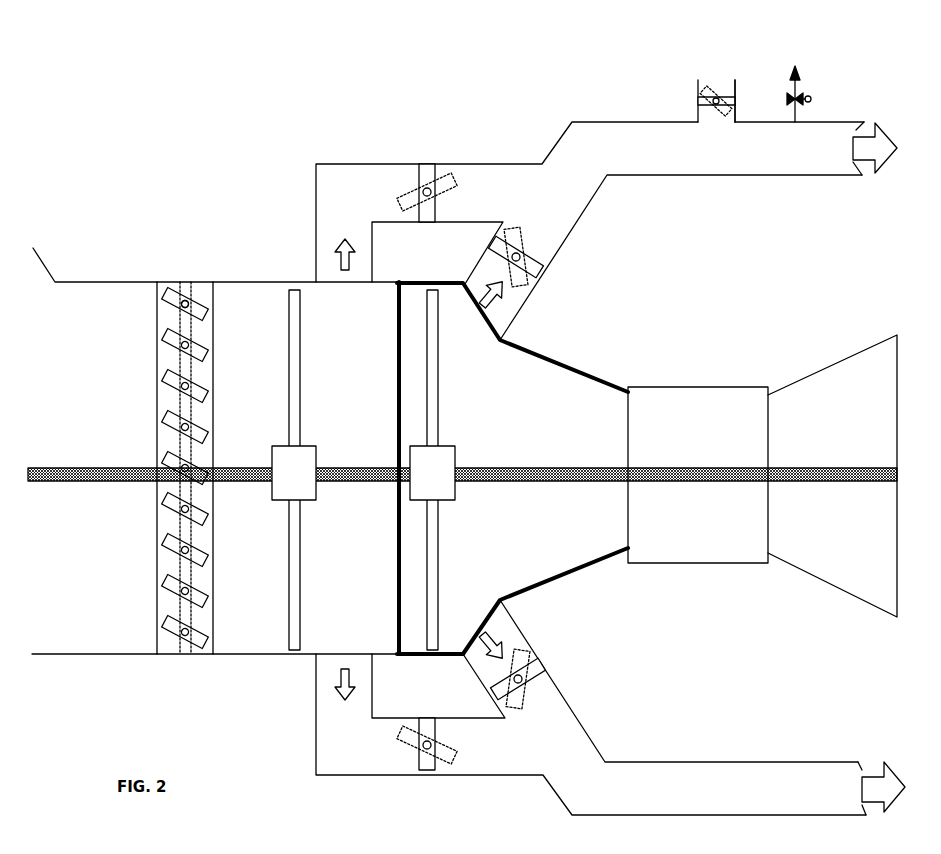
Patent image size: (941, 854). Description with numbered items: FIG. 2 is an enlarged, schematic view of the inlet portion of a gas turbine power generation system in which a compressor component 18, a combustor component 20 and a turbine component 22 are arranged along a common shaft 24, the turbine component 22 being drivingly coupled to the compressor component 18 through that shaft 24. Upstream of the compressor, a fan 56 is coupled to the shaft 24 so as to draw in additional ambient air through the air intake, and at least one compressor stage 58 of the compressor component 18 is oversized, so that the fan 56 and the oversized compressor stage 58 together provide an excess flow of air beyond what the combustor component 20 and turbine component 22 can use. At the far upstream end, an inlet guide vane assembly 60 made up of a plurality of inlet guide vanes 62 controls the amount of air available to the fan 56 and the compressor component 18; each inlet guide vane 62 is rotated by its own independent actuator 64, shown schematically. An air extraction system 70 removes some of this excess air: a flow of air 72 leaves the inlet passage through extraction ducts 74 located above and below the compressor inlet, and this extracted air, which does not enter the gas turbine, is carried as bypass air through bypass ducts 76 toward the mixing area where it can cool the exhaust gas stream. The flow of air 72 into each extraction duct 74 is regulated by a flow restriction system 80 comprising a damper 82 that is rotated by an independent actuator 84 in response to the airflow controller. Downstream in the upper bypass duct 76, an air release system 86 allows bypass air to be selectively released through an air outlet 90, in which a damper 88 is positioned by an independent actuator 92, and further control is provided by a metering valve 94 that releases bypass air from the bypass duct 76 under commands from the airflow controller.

The compressor component 18 is at (512, 468).
The combustor component 20 is at (698, 475).
The turbine component 22 is at (832, 476).
The shaft 24 is at (96, 466).
The fan 56 is at (288, 630).
The oversized compressor stage 58 is at (433, 531).
The inlet guide vane assembly 60 is at (155, 636).
The inlet guide vane 62 is at (172, 306).
The actuator 64 is at (187, 302).
The air extraction system 70 is at (480, 100).
The flow of air 72 is at (335, 262).
The extraction duct 74 is at (325, 208).
The bypass duct 76 is at (702, 468).
The flow restriction system 80 is at (422, 156).
The damper 82 is at (541, 262).
The actuator 84 is at (520, 256).
The air release system 86 is at (742, 98).
The damper 88 is at (704, 108).
The air outlet 90 is at (700, 72).
The actuator 92 is at (717, 98).
The metering valve 94 is at (801, 96).